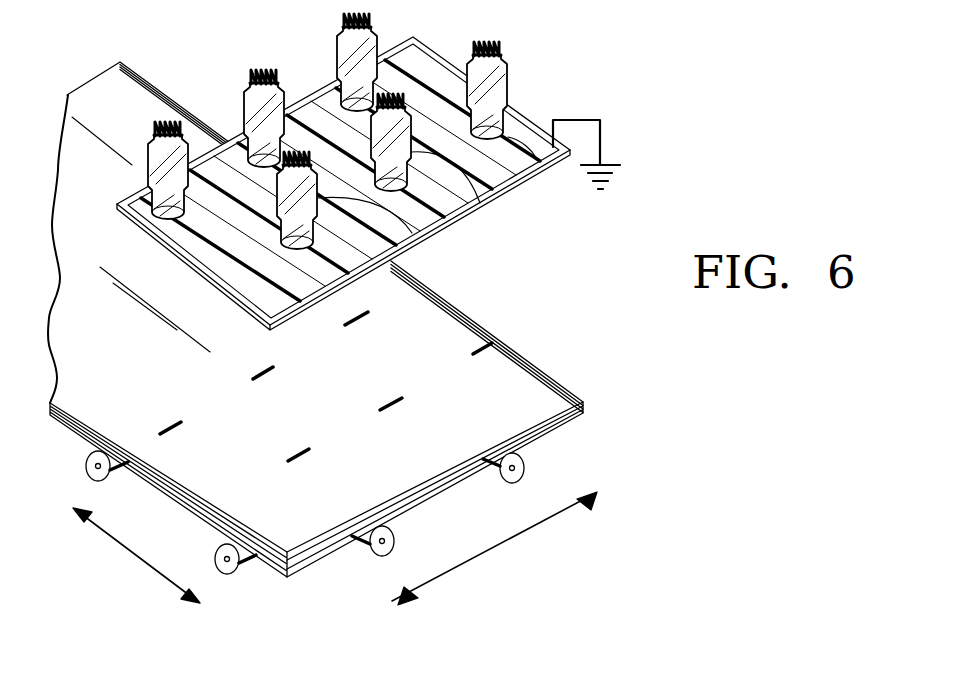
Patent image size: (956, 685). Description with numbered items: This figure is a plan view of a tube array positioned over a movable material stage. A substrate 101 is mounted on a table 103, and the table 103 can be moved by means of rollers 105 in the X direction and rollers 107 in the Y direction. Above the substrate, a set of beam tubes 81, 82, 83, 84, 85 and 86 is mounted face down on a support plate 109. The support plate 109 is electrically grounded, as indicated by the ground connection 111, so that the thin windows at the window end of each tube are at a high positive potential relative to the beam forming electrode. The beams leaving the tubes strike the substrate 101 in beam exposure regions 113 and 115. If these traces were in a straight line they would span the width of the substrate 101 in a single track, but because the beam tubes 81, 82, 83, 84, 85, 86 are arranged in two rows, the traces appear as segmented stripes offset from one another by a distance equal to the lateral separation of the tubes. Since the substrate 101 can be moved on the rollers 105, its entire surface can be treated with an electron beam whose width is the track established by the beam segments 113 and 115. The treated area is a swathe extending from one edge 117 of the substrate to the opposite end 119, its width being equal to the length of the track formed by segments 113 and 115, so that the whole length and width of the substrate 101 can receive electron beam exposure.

The electrode 81 is at (190, 170).
The electrode 82 is at (245, 110).
The electrode 83 is at (337, 56).
The electrode 84 is at (409, 238).
The electrode 85 is at (480, 203).
The electrode 86 is at (509, 72).
The substrate 101 is at (528, 383).
The table 103 is at (284, 578).
The rollers 105 is at (88, 475).
The rollers 107 is at (523, 482).
The support plate 109 is at (513, 118).
The ground 111 is at (614, 160).
The beam exposure regions 113 is at (183, 427).
The beam exposure regions 115 is at (308, 455).
The edge of the substrate 117 is at (60, 95).
The opposite end of the substrate 119 is at (449, 480).